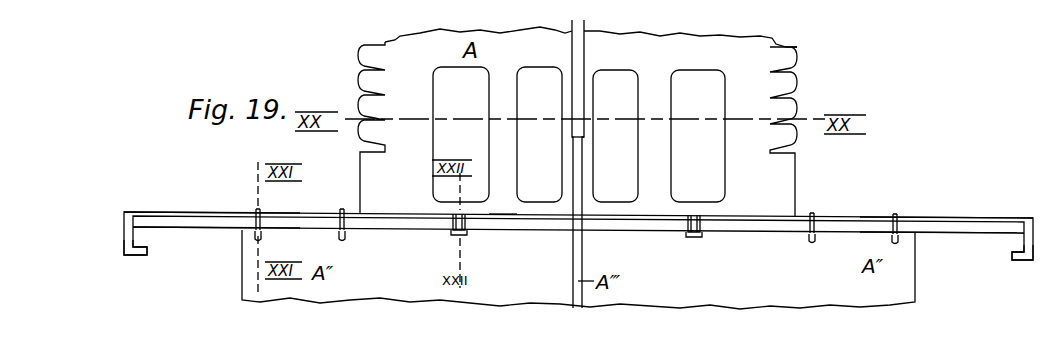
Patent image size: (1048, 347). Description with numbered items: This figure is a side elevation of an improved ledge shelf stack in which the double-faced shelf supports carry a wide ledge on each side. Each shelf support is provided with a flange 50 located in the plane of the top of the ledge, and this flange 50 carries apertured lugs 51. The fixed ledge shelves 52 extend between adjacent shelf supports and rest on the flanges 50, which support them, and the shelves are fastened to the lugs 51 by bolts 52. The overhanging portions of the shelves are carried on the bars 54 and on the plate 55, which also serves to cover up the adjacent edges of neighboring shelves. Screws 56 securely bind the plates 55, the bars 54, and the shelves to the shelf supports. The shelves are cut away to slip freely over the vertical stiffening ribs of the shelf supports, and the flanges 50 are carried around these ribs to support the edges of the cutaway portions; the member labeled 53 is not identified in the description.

The flange 50 is at (508, 229).
The apertured lug 51 is at (448, 228).
The fixed ledge shelf 52 is at (530, 216).
The bracket 53 is at (455, 216).
The bar 54 is at (176, 229).
The plate 55 is at (188, 212).
The screw 56 is at (258, 212).